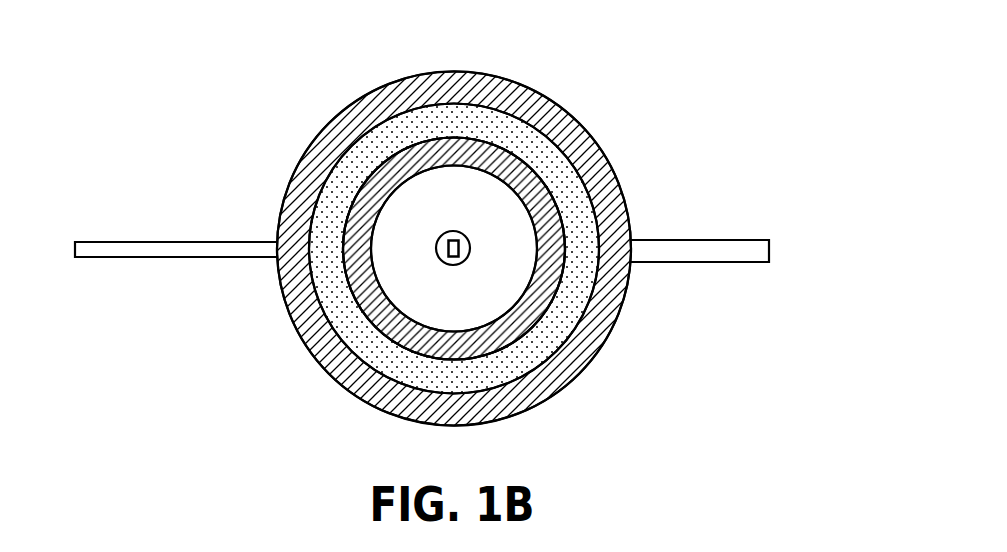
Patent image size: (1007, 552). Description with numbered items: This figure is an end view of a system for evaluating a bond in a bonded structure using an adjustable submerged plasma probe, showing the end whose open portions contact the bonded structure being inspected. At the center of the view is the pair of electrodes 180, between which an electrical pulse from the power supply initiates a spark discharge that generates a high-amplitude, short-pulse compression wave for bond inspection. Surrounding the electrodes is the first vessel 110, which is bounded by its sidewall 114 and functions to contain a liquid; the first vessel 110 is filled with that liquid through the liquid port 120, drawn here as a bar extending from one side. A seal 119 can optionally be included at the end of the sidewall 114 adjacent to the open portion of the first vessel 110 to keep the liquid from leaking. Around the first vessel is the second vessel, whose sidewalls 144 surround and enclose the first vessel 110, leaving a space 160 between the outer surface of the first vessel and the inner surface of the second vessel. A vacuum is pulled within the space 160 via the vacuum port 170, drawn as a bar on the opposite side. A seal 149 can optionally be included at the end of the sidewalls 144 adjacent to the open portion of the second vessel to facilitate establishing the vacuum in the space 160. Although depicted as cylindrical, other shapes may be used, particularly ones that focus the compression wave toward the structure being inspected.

The first vessel 110 is at (500, 195).
The sidewall 114 is at (382, 145).
The seal 119 is at (348, 216).
The liquid port 120 is at (756, 228).
The sidewall 144 is at (513, 66).
The seal 149 is at (622, 199).
The space 160 is at (340, 351).
The vacuum port 170 is at (152, 228).
The pair of electrodes 180 is at (480, 270).